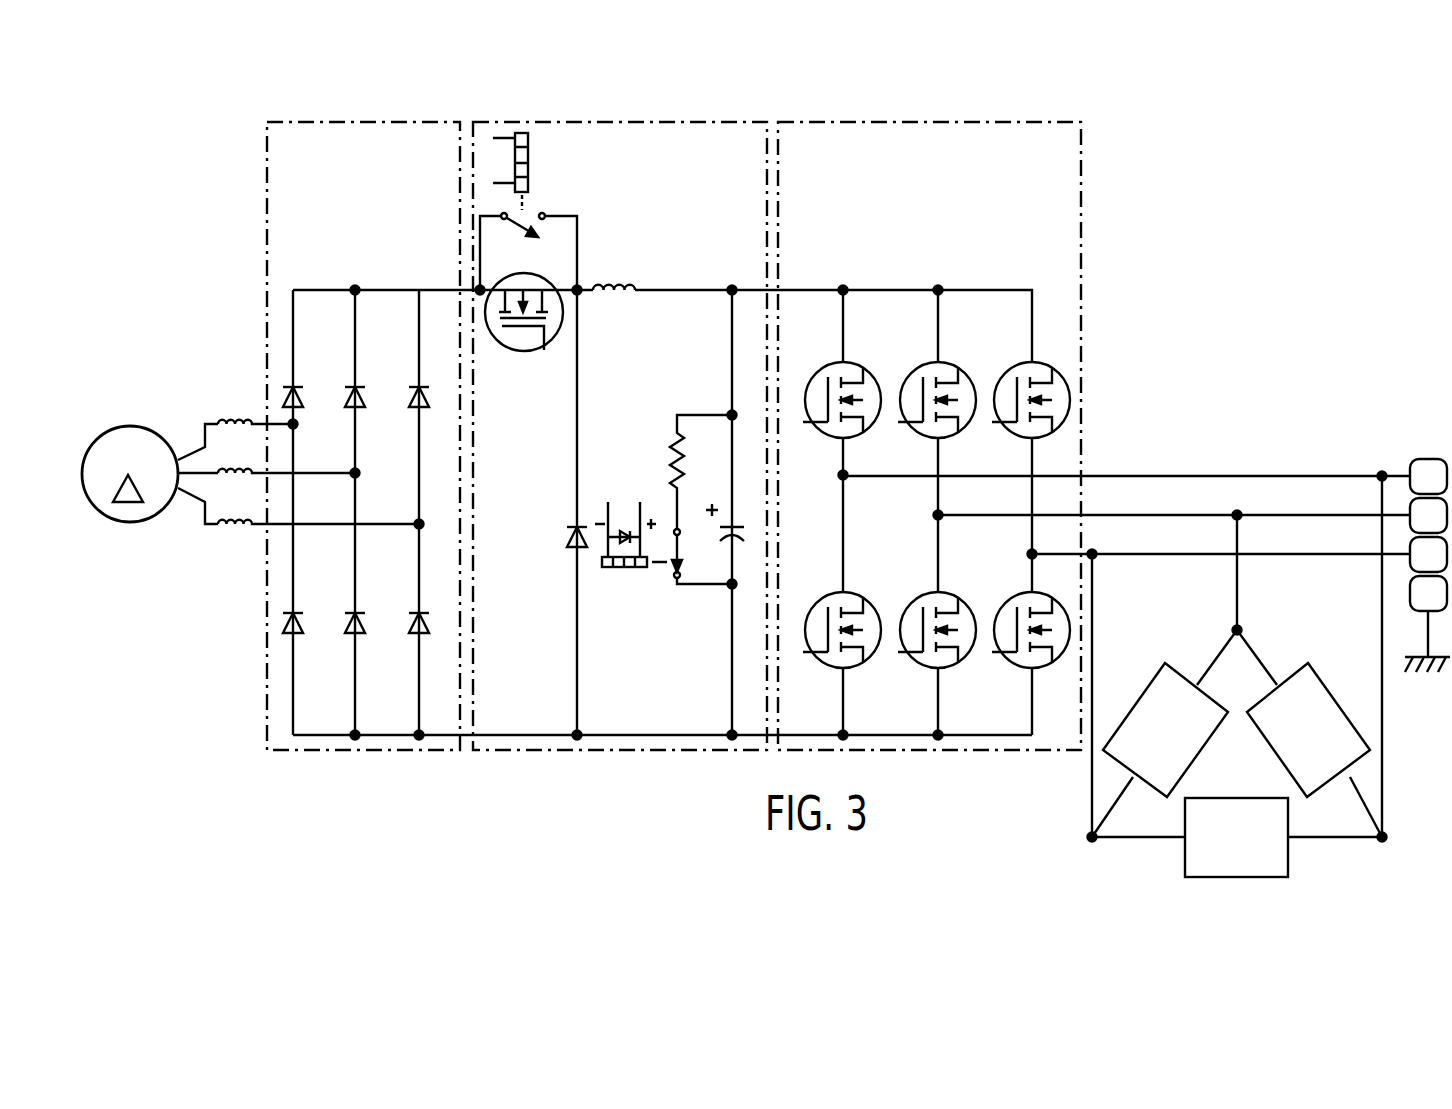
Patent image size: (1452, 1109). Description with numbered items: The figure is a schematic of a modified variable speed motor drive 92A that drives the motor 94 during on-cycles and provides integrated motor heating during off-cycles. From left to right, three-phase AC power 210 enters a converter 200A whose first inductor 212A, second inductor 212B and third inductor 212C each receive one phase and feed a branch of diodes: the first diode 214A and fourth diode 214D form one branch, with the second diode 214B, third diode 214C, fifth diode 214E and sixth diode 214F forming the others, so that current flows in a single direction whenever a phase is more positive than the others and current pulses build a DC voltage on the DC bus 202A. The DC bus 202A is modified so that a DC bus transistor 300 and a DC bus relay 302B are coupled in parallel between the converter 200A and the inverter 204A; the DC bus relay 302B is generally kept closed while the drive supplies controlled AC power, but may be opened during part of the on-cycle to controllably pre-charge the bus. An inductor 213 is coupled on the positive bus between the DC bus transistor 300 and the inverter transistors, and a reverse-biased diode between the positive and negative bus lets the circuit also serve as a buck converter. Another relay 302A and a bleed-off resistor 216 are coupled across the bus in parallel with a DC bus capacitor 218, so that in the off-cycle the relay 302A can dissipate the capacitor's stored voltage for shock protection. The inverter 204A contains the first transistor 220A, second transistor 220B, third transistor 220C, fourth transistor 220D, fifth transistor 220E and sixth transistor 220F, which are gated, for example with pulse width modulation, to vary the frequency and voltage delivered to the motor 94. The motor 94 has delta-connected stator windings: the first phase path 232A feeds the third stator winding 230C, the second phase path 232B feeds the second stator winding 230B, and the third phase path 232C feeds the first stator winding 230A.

The modified variable speed motor drive 92A is at (1210, 122).
The converter 200A is at (357, 120).
The DC bus 202A is at (620, 122).
The inverter 204A is at (925, 122).
The three-phase AC power 210 is at (112, 428).
The first inductor (L1) 212A is at (213, 422).
The second inductor (L2) 212B is at (217, 472).
The third inductor (L3) 212C is at (231, 528).
The first diode (D1) 214A is at (290, 634).
The second diode (D2) 214B is at (353, 634).
The third diode (D3) 214C is at (415, 634).
The fourth diode (D4) 214D is at (290, 386).
The fifth diode (D5) 214E is at (353, 386).
The sixth diode (D6) 214F is at (417, 386).
The inductor (L1) 213 is at (632, 285).
The bleed-off resistor (R1) 216 is at (672, 460).
The DC bus capacitor (C1) 218 is at (727, 523).
The first transistor (Q1) 220A is at (833, 362).
The second transistor (Q2) 220B is at (830, 592).
The third transistor (Q3) 220C is at (928, 362).
The fourth transistor (Q4) 220D is at (925, 592).
The fifth transistor (Q5) 220E is at (1022, 362).
The sixth transistor (Q6) 220F is at (1018, 592).
The first stator winding (winding 1) 230A is at (1147, 685).
The second stator winding (winding 2) 230B is at (1327, 685).
The third stator winding (winding 3) 230C is at (1235, 878).
The first phase path 232A is at (1158, 476).
The second phase path 232B is at (1200, 515).
The third phase path 232C is at (1287, 556).
The DC bus transistor (Q7) 300 is at (530, 353).
The relay (RY1) 302A is at (703, 578).
The DC bus relay (RY2) 302B is at (527, 216).
The motor 94 is at (1400, 470).